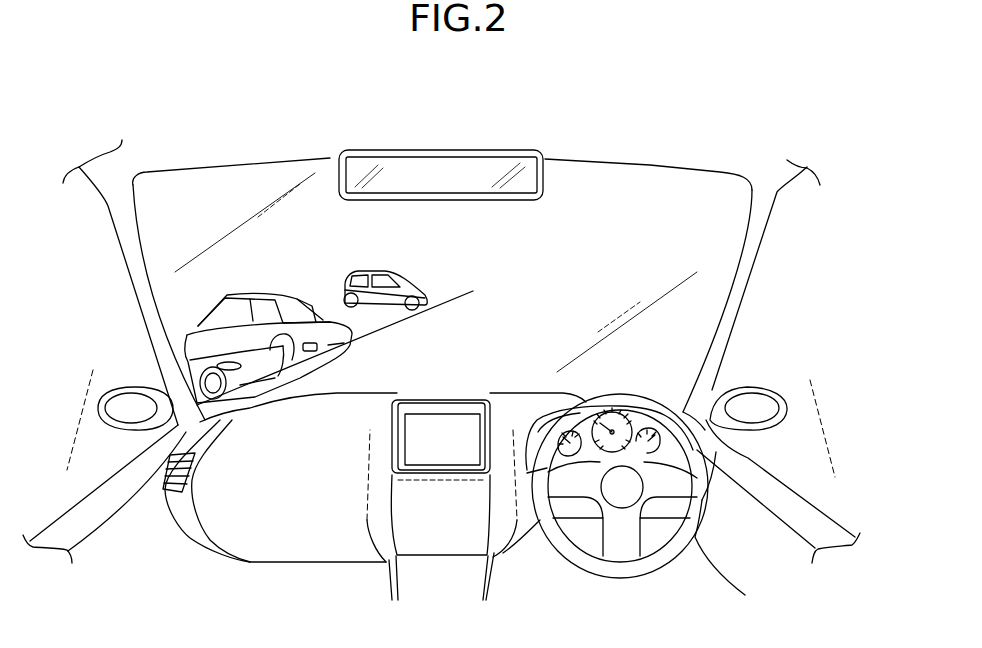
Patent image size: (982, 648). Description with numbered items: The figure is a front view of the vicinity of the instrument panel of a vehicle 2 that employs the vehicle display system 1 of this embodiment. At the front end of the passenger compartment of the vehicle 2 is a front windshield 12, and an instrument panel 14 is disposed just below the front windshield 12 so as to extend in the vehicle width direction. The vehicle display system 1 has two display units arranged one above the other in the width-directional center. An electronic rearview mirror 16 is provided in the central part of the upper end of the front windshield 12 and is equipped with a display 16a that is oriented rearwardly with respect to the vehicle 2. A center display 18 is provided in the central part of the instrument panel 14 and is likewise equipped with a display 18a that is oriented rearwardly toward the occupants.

The vehicle display system 1 is at (591, 124).
The vehicle 2 is at (775, 188).
The front windshield 12 is at (679, 188).
The instrument panel 14 is at (332, 426).
The electronic rearview mirror 16 is at (512, 200).
The display 16a is at (470, 170).
The center display 18 is at (471, 412).
The display 18a is at (434, 438).